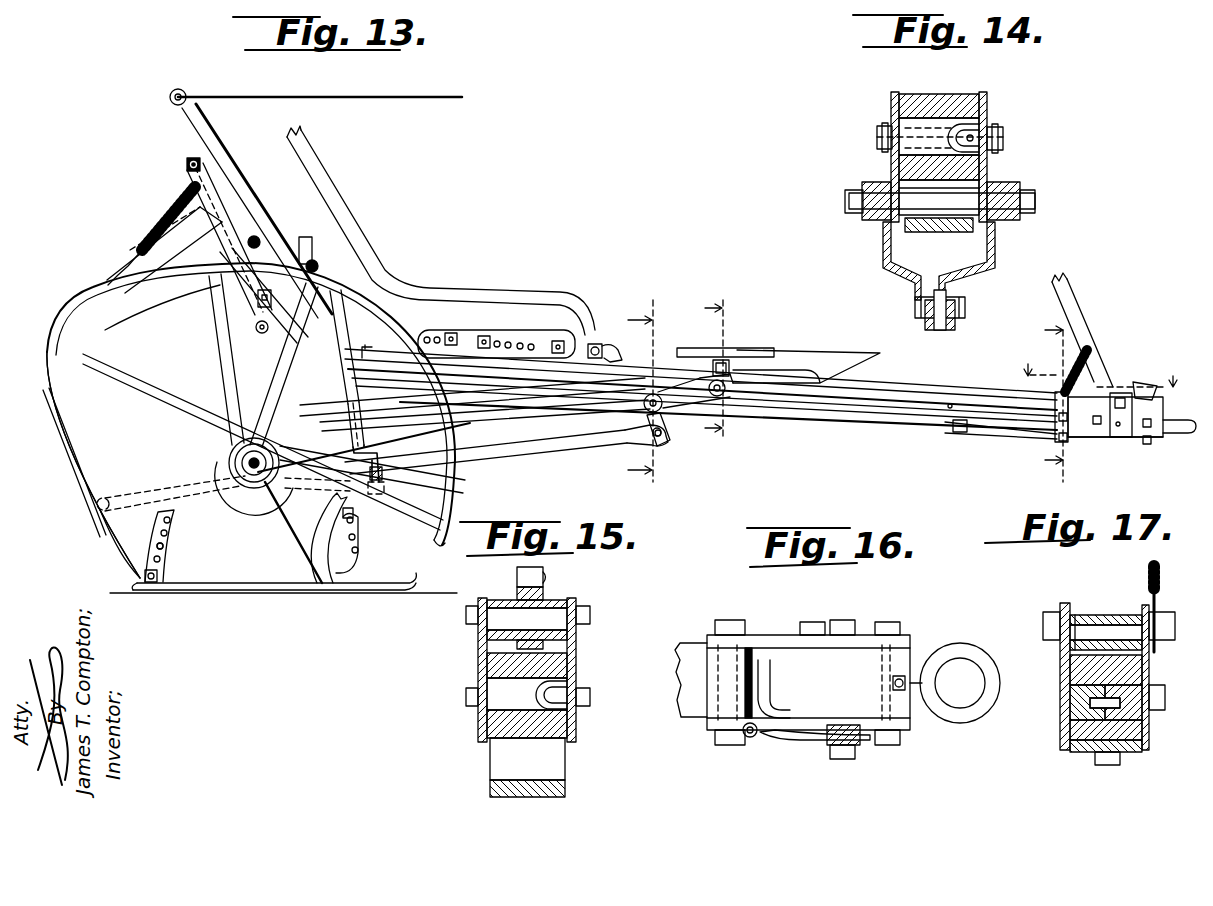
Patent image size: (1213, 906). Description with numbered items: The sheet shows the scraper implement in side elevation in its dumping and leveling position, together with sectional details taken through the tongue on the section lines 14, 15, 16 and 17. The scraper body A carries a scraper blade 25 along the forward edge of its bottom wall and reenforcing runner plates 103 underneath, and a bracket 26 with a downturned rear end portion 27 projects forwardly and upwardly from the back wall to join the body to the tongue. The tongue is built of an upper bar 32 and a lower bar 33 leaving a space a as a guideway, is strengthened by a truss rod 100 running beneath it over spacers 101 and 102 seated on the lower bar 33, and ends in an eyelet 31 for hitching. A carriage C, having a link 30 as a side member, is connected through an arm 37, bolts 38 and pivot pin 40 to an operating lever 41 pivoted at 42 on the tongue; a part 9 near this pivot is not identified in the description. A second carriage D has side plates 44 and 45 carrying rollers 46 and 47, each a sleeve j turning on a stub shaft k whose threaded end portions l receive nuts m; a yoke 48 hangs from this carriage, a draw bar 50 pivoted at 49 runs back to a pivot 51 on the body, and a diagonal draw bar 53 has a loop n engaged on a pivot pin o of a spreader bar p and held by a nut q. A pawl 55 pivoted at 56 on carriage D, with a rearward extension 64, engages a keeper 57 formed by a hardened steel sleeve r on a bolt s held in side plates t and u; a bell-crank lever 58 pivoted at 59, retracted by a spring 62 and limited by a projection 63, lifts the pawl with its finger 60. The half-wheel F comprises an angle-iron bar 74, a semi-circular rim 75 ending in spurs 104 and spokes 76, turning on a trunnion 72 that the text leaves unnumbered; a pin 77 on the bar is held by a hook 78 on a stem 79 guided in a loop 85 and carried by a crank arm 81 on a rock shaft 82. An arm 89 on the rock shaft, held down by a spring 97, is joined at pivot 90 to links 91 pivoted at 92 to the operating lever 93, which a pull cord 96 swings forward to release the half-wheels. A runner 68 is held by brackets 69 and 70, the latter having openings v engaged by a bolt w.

In FIG. 13, the pull cord 96 is at (428, 100).
In FIG. 13, the operating lever 93 is at (186, 118).
In FIG. 13, the links 91 is at (222, 195).
In FIG. 13, the pivot 90 is at (186, 163).
In FIG. 13, the pivot 92 is at (258, 238).
In FIG. 13, the arm 89 is at (180, 187).
In FIG. 13, the spring 97 is at (162, 218).
In FIG. 13, the downturned rear end portion 27 is at (177, 240).
In FIG. 13, the bracket 26 is at (232, 253).
In FIG. 13, the operating lever 41 is at (326, 183).
In FIG. 13, the scraper body A is at (68, 294).
In FIG. 13, the half-wheel F is at (105, 333).
In FIG. 13, the spokes 76 is at (208, 350).
In FIG. 13, the angle-iron bar 74 is at (165, 400).
In FIG. 13, the reenforcing runner plates 103 is at (62, 441).
In FIG. 13, the pivot 51 is at (104, 497).
In FIG. 13, the hub 72 is at (236, 463).
In FIG. 13, the scraper blade 25 is at (95, 540).
In FIG. 13, the bracket 70 is at (170, 528).
In FIG. 13, the spaced openings v is at (165, 546).
In FIG. 13, the bolt w is at (160, 570).
In FIG. 13, the bracket 69 is at (318, 540).
In FIG. 13, the runner 68 is at (236, 592).
In FIG. 13, the link 30 is at (300, 365).
In FIG. 13, the stem 79 is at (346, 385).
In FIG. 13, the elongated loop 85 is at (346, 402).
In FIG. 13, the hook 78 is at (380, 456).
In FIG. 13, the pin 77 is at (390, 490).
In FIG. 13, the semi-circular rim 75 is at (455, 484).
In FIG. 13, the spurs 104 is at (434, 544).
In FIG. 13, the crank arm 81 is at (256, 323).
In FIG. 13, the rock shaft 82 is at (258, 332).
In FIG. 13, the carriage C is at (372, 341).
In FIG. 13, the arm 37 is at (508, 330).
In FIG. 13, the bolts 38 is at (484, 336).
In FIG. 13, the pivot pin 40 is at (560, 340).
In FIG. 13, the pivot 42 is at (596, 344).
In FIG. 13, the lug 9 is at (612, 358).
In FIG. 13, the top bar 32 is at (905, 392).
In FIG. 14, the top bar 32 is at (936, 95).
In FIG. 15, the top bar 32 is at (577, 665).
In FIG. 16, the top bar 32 is at (683, 648).
In FIG. 17, the top bar 32 is at (1062, 680).
In FIG. 13, the lower bar 33 is at (920, 404).
In FIG. 14, the lower bar 33 is at (900, 165).
In FIG. 15, the lower bar 33 is at (498, 722).
In FIG. 17, the lower bar 33 is at (1080, 729).
In FIG. 13, the space a is at (951, 403).
In FIG. 13, the truss rod 100 is at (852, 428).
In FIG. 14, the truss rod 100 is at (952, 233).
In FIG. 15, the truss rod 100 is at (500, 788).
In FIG. 17, the truss rod 100 is at (1080, 753).
In FIG. 13, the spacer 102 is at (958, 433).
In FIG. 13, the draw bar 53 is at (488, 430).
In FIG. 13, the spacer 101 is at (560, 395).
In FIG. 13, the draw bar 50 is at (545, 456).
In FIG. 14, the draw bar 50 is at (938, 326).
In FIG. 13, the section line 14— 14 is at (639, 389).
In FIG. 13, the pivot 56 is at (727, 362).
In FIG. 15, the pivot 56 is at (590, 614).
In FIG. 13, the carriage D is at (677, 346).
In FIG. 13, the rearward extension 64 is at (706, 349).
In FIG. 13, the pawl 55 is at (812, 342).
In FIG. 15, the pawl 55 is at (516, 578).
In FIG. 13, the section line 15— 15 is at (718, 367).
In FIG. 13, the section line 17— 17 is at (1090, 395).
In FIG. 13, the section line 16— 16 is at (1084, 393).
In FIG. 13, the bell-crank lever 58 is at (1079, 303).
In FIG. 16, the bell-crank lever 58 is at (815, 742).
In FIG. 13, the spring 62 is at (1070, 365).
In FIG. 16, the spring 62 is at (748, 738).
In FIG. 17, the spring 62 is at (1154, 565).
In FIG. 13, the pivot 59 is at (1124, 392).
In FIG. 16, the pivot 59 is at (840, 760).
In FIG. 13, the projection 63 is at (1146, 386).
In FIG. 13, the eyelet 31 is at (1178, 436).
In FIG. 16, the eyelet 31 is at (942, 645).
In FIG. 14, the side plate 44 is at (893, 92).
In FIG. 14, the side plate 45 is at (988, 92).
In FIG. 14, the roller 46 is at (913, 132).
In FIG. 14, the stub shaft k is at (975, 136).
In FIG. 15, the stub shaft k is at (560, 700).
In FIG. 14, the sleeve j is at (988, 114).
In FIG. 14, the reduced threaded end portions l is at (876, 135).
In FIG. 15, the reduced threaded end portions l is at (590, 697).
In FIG. 14, the nuts m is at (878, 145).
In FIG. 14, the pivot pins o is at (846, 200).
In FIG. 14, the nuts q is at (850, 213).
In FIG. 14, the loops n is at (875, 215).
In FIG. 14, the spreader bar p is at (922, 205).
In FIG. 14, the yoke 48 is at (882, 262).
In FIG. 14, the pivot 49 is at (915, 302).
In FIG. 15, the roller 47 is at (505, 690).
In FIG. 16, the keeper 57 is at (752, 650).
In FIG. 17, the keeper 57 is at (1104, 614).
In FIG. 16, the hardened steel sleeve r is at (715, 680).
In FIG. 17, the hardened steel sleeve r is at (1077, 614).
In FIG. 16, the finger 60 is at (772, 680).
In FIG. 17, the bolt s is at (1043, 625).
In FIG. 17, the side plate t is at (1062, 666).
In FIG. 17, the side plate u is at (1150, 670).